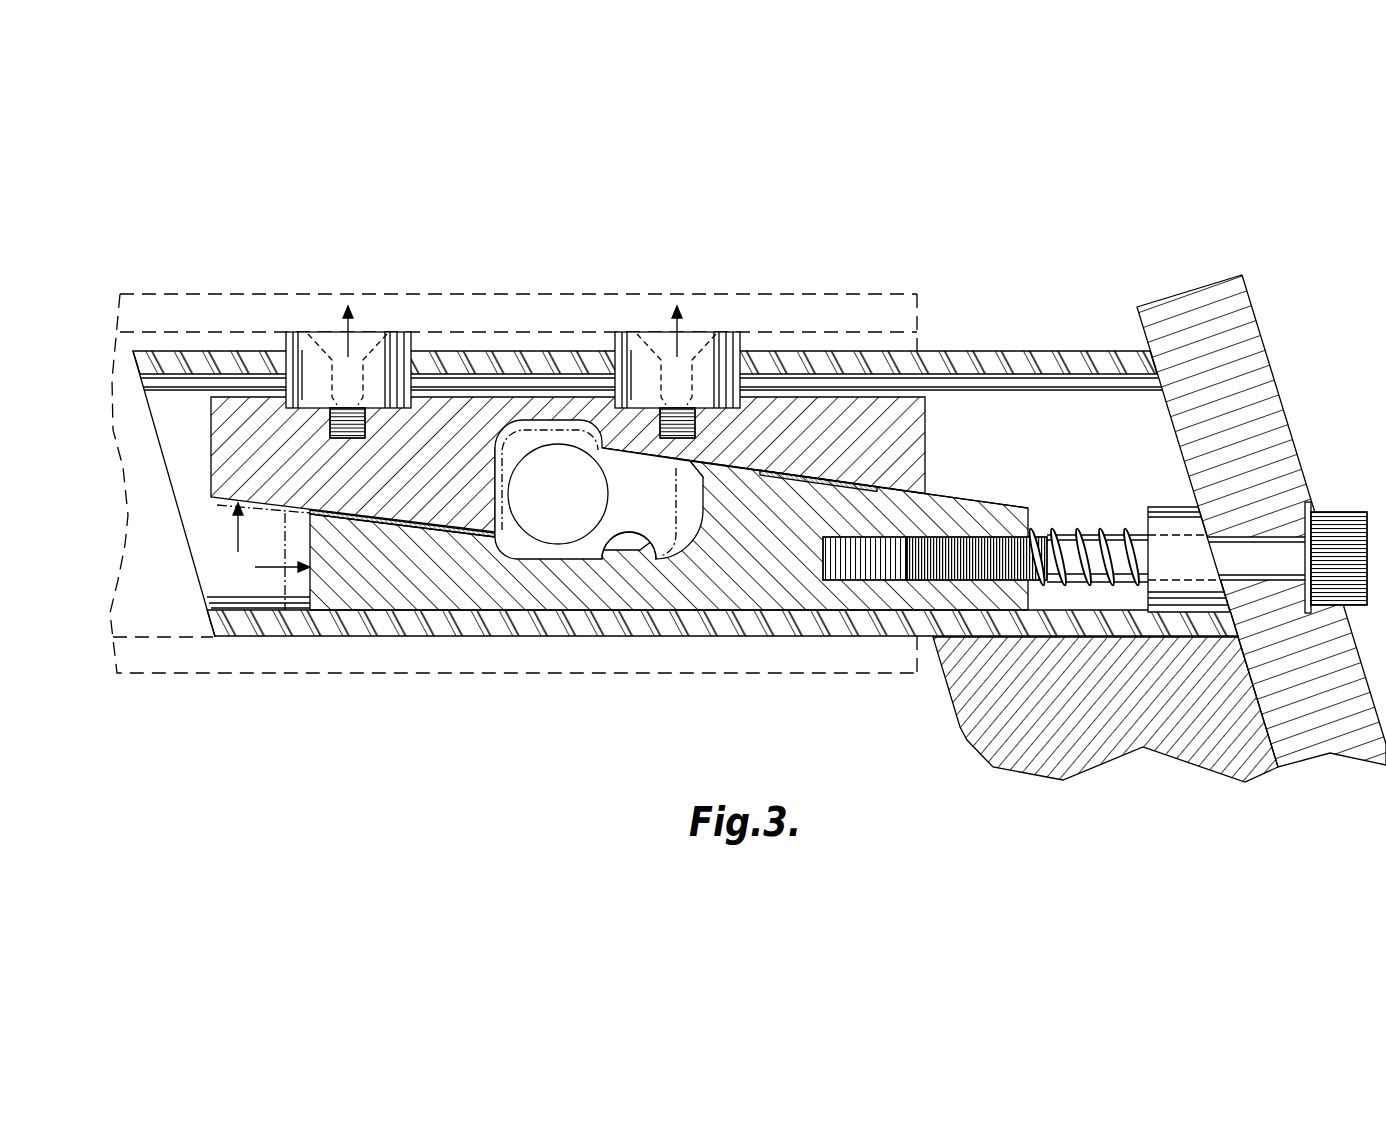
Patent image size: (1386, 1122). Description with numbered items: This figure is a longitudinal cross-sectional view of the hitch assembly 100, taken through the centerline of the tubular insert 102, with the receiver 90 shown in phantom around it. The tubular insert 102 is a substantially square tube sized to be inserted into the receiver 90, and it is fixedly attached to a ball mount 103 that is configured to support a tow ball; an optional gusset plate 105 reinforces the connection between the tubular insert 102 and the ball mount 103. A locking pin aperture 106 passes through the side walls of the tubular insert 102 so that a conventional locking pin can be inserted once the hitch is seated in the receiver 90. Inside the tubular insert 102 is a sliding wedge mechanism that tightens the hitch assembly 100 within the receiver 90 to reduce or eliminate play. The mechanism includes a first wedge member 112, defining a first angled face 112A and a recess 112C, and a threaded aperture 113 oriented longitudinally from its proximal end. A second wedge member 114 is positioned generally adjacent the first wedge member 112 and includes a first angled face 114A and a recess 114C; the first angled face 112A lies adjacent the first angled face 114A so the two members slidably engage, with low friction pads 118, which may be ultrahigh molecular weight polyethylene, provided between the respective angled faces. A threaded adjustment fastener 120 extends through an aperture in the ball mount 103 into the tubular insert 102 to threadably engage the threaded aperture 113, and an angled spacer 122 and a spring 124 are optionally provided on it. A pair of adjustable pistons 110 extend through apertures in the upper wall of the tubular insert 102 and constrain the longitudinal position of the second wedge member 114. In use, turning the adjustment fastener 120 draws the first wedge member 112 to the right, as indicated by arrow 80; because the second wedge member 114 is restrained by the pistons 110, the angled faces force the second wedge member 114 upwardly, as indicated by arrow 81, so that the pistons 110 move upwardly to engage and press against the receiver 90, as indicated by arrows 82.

The hitch assembly 100 is at (851, 186).
The receiver 90 is at (468, 288).
The tubular insert 102 is at (178, 350).
The ball mount 103 is at (1250, 300).
The gusset plate 105 is at (1005, 762).
The locking pin aperture 106 is at (555, 538).
The adjustable piston 110 is at (422, 338).
The first wedge member 112 is at (305, 612).
The first angled face of first wedge member 112A is at (972, 503).
The recess of first wedge member 112C is at (640, 553).
The threaded aperture 113 is at (852, 587).
The second wedge member 114 is at (207, 440).
The first angled face of second wedge member 114A is at (622, 447).
The recess of second wedge member 114C is at (540, 428).
The low friction pad 118 is at (385, 540).
The threaded adjustment fastener 120 is at (1340, 510).
The angled spacer 122 is at (1193, 602).
The spring 124 is at (1078, 586).
The arrow 80 is at (255, 567).
The arrow 81 is at (238, 552).
The arrows 82 is at (345, 330).